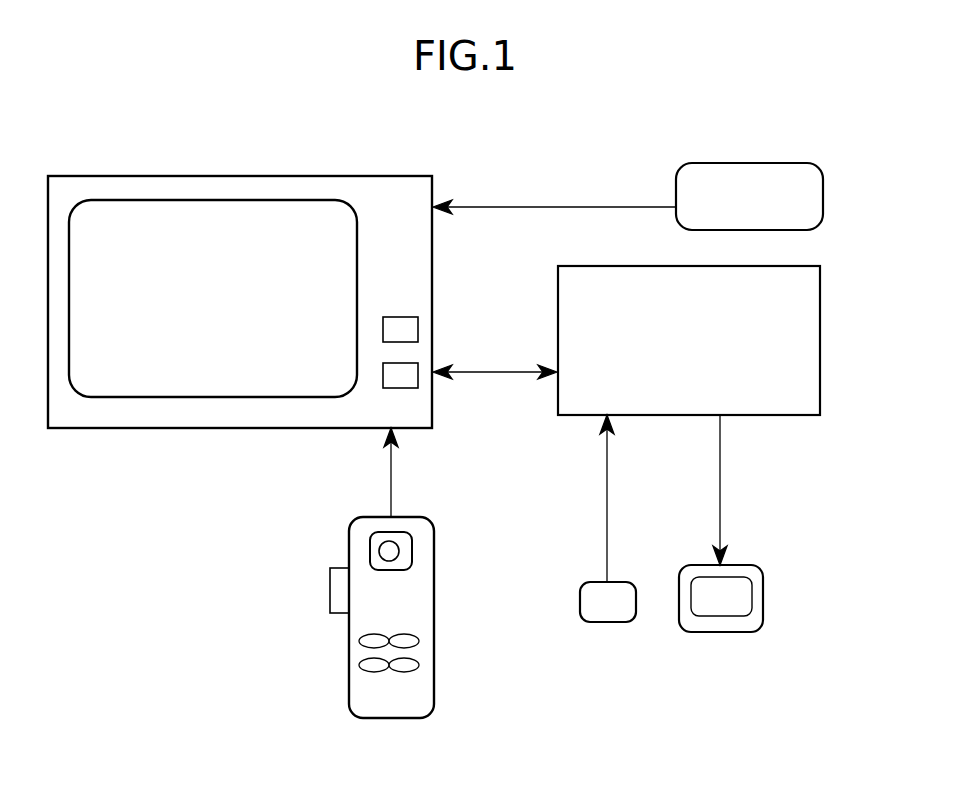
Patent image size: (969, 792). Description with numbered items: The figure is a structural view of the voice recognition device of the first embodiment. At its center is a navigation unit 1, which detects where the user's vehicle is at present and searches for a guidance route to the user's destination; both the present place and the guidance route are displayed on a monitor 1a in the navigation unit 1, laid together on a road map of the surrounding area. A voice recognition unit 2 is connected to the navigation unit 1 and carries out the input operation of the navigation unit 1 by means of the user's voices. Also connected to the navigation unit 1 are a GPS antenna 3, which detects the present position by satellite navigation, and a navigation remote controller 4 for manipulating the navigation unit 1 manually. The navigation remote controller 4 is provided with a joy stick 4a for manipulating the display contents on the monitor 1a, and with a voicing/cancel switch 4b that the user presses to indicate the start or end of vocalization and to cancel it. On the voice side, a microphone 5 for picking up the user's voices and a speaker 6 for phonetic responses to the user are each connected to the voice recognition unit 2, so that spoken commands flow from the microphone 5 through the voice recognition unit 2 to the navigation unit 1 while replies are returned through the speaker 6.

The navigation unit 1 is at (212, 176).
The monitor 1a is at (313, 200).
The voice recognition unit 2 is at (797, 266).
The GPS antenna 3 is at (788, 163).
The navigation remote controller 4 is at (434, 587).
The joy stick 4a is at (397, 532).
The voicing/cancel switch 4b is at (330, 590).
The microphone 5 is at (580, 600).
The speaker 6 is at (680, 617).